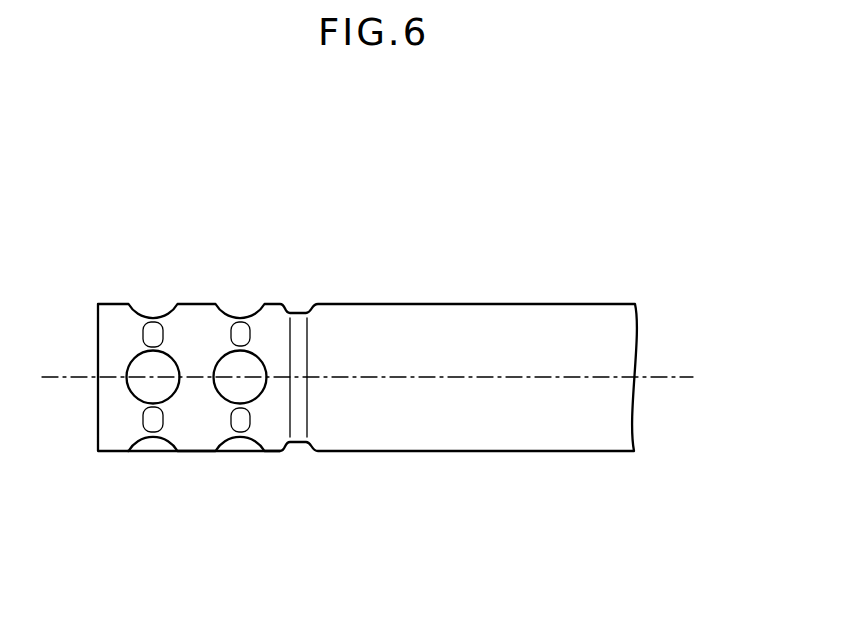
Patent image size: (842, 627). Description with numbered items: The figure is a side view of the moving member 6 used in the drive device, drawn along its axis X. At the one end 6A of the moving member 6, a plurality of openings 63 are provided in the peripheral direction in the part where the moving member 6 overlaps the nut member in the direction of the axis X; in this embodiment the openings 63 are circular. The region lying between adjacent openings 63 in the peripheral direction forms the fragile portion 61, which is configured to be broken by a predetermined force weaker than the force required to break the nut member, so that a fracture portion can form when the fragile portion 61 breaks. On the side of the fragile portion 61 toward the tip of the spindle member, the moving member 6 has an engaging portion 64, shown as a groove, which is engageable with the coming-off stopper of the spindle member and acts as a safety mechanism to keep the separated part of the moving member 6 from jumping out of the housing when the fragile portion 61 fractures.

The moving member 6 is at (642, 163).
The one end of the moving member 6A is at (198, 459).
The fragile portion 61 is at (233, 333).
The openings 63 is at (141, 354).
The engaging portion 64 is at (298, 443).
The axis X is at (680, 376).